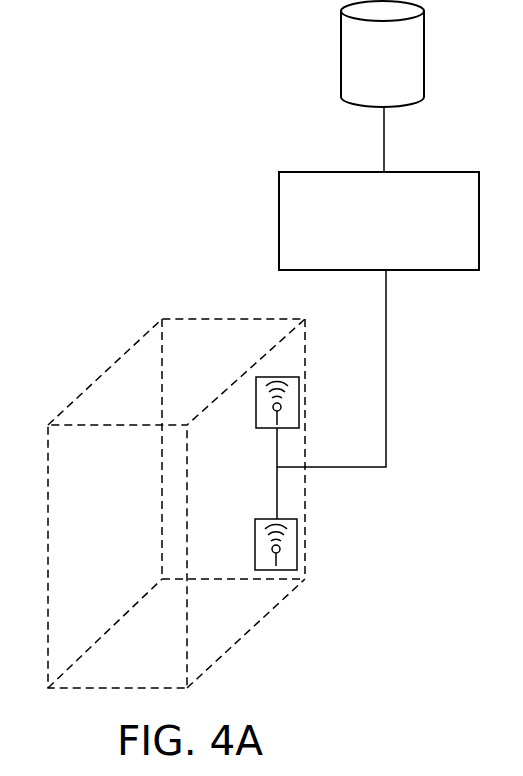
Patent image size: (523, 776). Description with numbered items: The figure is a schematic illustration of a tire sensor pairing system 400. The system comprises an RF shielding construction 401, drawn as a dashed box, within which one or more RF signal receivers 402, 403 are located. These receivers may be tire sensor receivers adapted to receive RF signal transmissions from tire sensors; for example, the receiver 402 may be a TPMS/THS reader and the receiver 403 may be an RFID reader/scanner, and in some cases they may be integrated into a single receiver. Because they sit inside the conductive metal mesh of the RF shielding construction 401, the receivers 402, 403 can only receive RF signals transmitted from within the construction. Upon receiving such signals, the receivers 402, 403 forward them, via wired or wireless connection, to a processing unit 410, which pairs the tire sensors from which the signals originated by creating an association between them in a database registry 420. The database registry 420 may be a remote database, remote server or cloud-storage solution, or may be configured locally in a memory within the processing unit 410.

The tire sensor pairing system 400 is at (203, 163).
The RF shielding construction 401 is at (143, 337).
The RF signal receiver 402 is at (297, 543).
The RF signal receiver 403 is at (300, 400).
The processing unit 410 is at (364, 233).
The database registry 420 is at (364, 71).